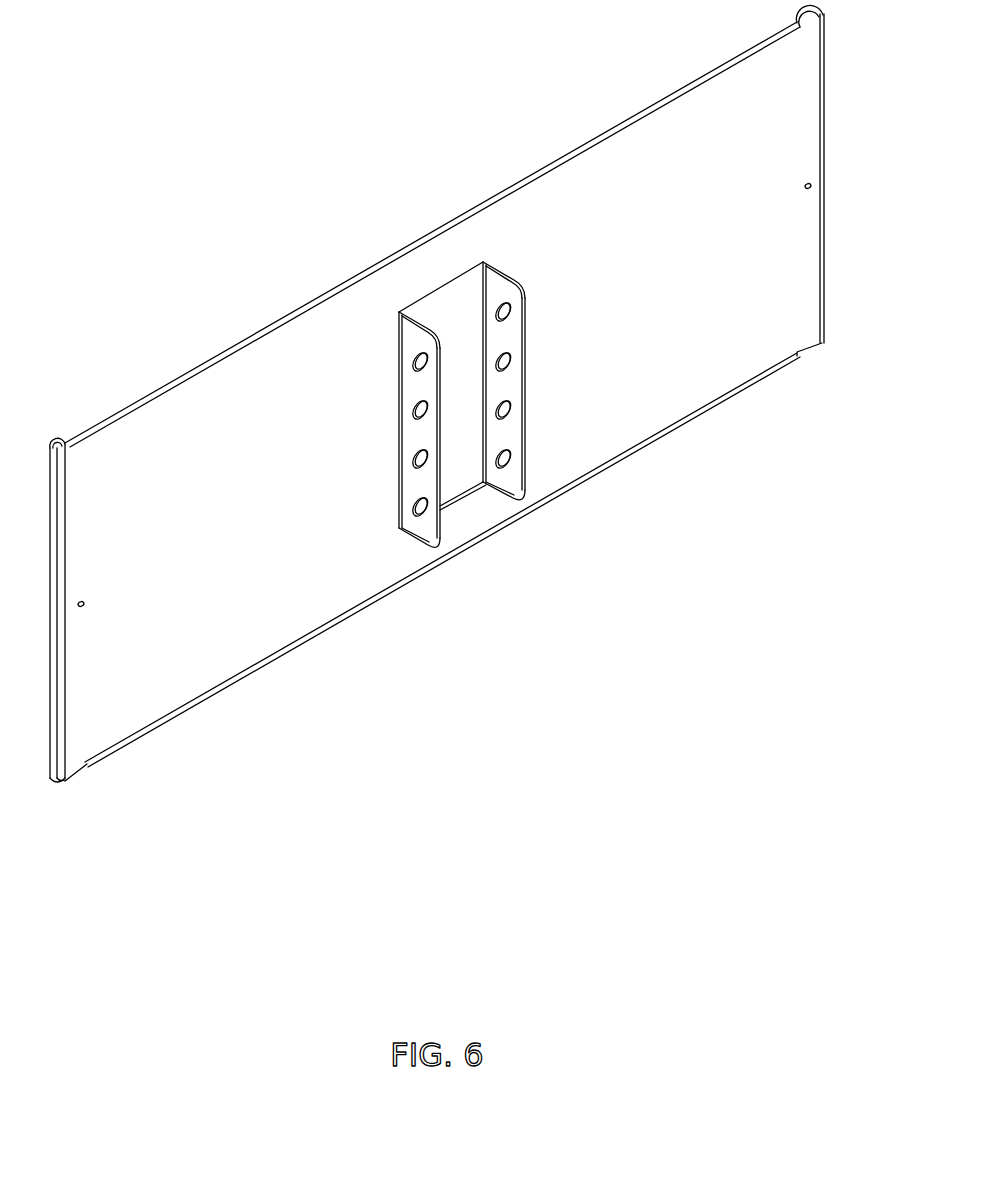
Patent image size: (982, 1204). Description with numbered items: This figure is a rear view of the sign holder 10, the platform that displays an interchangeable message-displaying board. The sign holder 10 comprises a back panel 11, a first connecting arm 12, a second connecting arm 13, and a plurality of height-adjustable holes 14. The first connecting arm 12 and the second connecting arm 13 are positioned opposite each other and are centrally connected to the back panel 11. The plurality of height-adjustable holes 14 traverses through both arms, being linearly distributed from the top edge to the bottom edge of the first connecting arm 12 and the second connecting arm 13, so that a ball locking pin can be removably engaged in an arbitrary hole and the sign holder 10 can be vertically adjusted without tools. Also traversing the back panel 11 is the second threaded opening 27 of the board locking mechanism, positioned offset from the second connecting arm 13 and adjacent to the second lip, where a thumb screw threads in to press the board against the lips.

The sign holder 10 is at (311, 257).
The back panel 11 is at (821, 112).
The first connecting arm 12 is at (403, 334).
The second connecting arm 13 is at (526, 328).
The plurality of height-adjustable holes 14 is at (490, 314).
The second threaded opening 27 is at (819, 184).